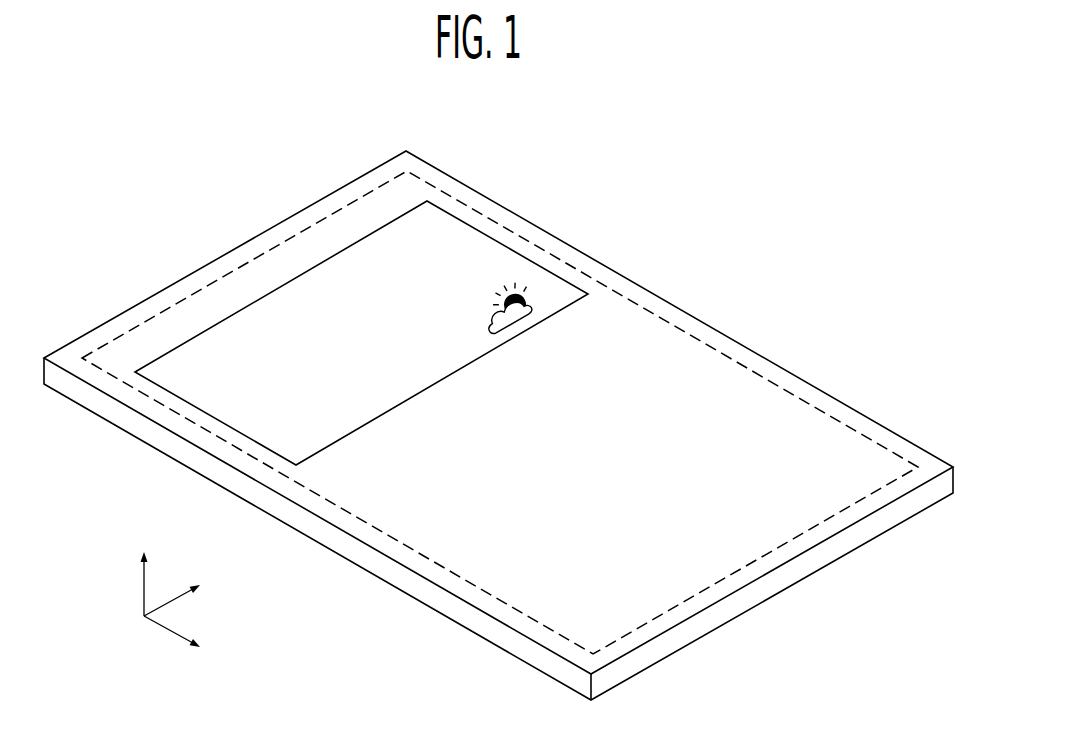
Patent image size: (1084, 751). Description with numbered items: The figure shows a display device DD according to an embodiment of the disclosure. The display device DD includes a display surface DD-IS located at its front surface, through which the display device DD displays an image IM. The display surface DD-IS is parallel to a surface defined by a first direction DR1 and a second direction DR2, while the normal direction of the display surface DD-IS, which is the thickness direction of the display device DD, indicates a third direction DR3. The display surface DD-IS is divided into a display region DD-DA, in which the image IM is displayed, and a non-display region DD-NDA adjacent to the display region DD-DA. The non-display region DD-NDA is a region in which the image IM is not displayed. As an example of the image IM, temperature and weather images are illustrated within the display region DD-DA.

The display device DD is at (712, 182).
The display surface DD-IS is at (498, 405).
The display region DD-DA is at (284, 254).
The non-display region DD-NDA is at (203, 283).
The image IM is at (510, 248).
The first direction DR1 is at (191, 642).
The second direction DR2 is at (191, 595).
The third direction DR3 is at (145, 569).